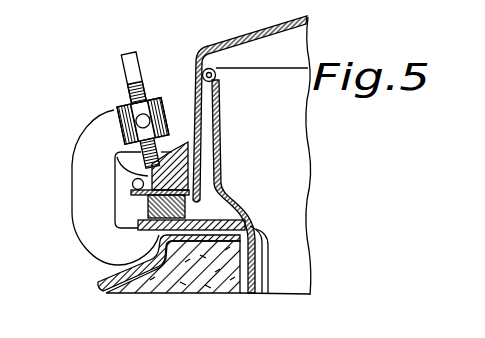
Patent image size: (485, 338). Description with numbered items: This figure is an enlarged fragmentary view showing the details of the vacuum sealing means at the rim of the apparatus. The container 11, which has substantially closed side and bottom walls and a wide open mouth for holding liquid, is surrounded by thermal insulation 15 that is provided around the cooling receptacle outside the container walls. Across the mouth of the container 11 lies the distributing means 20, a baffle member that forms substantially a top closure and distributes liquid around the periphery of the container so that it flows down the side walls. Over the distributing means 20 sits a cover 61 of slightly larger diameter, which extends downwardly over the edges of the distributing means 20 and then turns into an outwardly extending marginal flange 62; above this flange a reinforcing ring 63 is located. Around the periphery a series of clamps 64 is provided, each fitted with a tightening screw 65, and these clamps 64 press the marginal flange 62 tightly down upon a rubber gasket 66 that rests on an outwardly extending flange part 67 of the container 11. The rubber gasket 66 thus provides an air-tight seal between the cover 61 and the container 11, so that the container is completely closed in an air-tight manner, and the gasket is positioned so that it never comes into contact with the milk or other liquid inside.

The container 11 is at (254, 268).
The thermal insulation 15 is at (254, 229).
The distributing means 20 is at (219, 180).
The cover 61 is at (275, 28).
The marginal flange 62 is at (133, 189).
The reinforcing ring 63 is at (176, 140).
The clamp 64 is at (81, 170).
The tightening screw 65 is at (126, 78).
The rubber gasket 66 is at (147, 207).
The flange part 67 is at (159, 237).